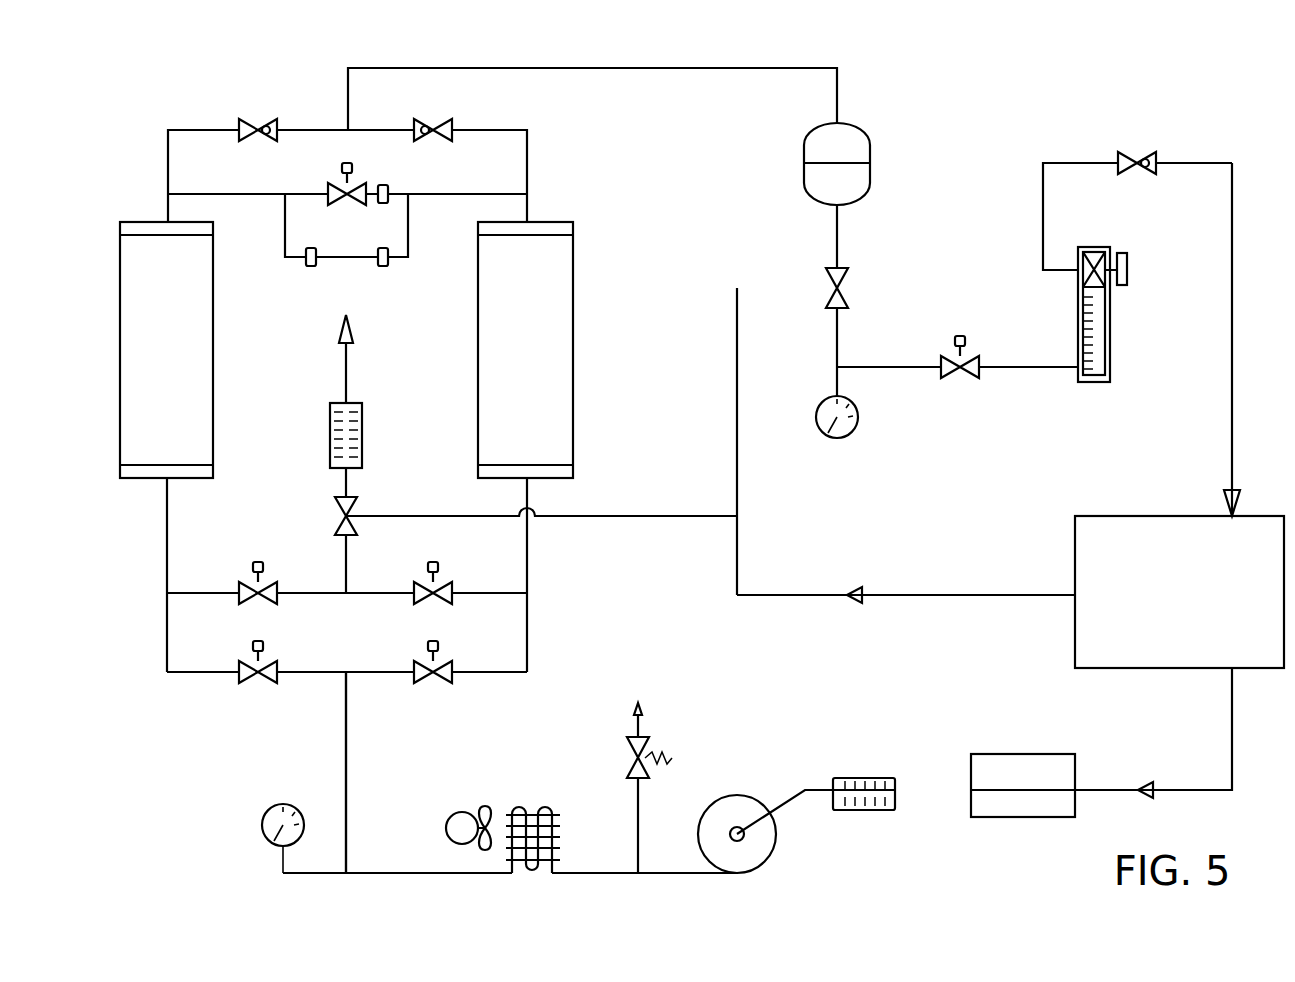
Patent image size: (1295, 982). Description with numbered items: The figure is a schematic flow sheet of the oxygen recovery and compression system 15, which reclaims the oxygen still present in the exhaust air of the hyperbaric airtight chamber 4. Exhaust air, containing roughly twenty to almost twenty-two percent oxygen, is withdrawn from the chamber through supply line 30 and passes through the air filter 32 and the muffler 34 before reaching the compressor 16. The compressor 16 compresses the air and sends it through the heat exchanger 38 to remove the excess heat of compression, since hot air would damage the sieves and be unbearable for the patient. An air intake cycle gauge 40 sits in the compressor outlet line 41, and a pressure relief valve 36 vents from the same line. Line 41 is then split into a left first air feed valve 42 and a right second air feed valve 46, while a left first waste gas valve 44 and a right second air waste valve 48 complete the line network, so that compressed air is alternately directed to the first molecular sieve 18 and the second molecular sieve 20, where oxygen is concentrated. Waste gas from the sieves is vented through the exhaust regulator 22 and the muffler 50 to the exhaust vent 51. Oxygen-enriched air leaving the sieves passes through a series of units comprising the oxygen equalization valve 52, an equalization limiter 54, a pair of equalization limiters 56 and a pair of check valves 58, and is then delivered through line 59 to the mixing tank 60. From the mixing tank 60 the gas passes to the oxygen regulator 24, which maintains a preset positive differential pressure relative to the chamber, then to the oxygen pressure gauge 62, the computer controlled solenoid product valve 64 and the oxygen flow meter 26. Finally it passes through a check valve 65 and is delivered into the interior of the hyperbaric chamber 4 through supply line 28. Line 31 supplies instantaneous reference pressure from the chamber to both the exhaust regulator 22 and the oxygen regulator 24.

The hyperbaric airtight chamber 4 is at (1088, 512).
The oxygen recovery and compression system 15 is at (1201, 112).
The compressor 16 is at (779, 841).
The first molecular sieve 18 is at (215, 350).
The second molecular sieve 20 is at (575, 350).
The exhaust regulator 22 is at (338, 516).
The oxygen regulator 24 is at (852, 283).
The oxygen flow meter 26 is at (1113, 325).
The supply line 28 is at (1192, 339).
The supply line 30 is at (1206, 781).
The line 31 is at (930, 592).
The air filter 32 is at (1022, 752).
The muffler 34 is at (850, 776).
The pressure relief valve 36 is at (668, 742).
The heat exchanger 38 is at (516, 791).
The air intake cycle gauge 40 is at (275, 805).
The compressor outlet line 41 is at (345, 751).
The first air feed valve 42 is at (253, 681).
The first waste gas valve 44 is at (249, 582).
The second air feed valve 46 is at (438, 681).
The second air waste valve 48 is at (444, 582).
The muffler 50 is at (330, 435).
The exhaust vent 51 is at (350, 358).
The oxygen equalization valve 52 is at (338, 186).
The equalization limiter 54 is at (390, 185).
The equalization limiters 56 is at (313, 268).
The check valves 58 is at (262, 121).
The line 59 is at (737, 72).
The mixing tank 60 is at (873, 126).
The oxygen pressure gauge 62 is at (849, 433).
The computer controlled solenoid product valve 64 is at (962, 389).
The check valve 65 is at (1137, 152).